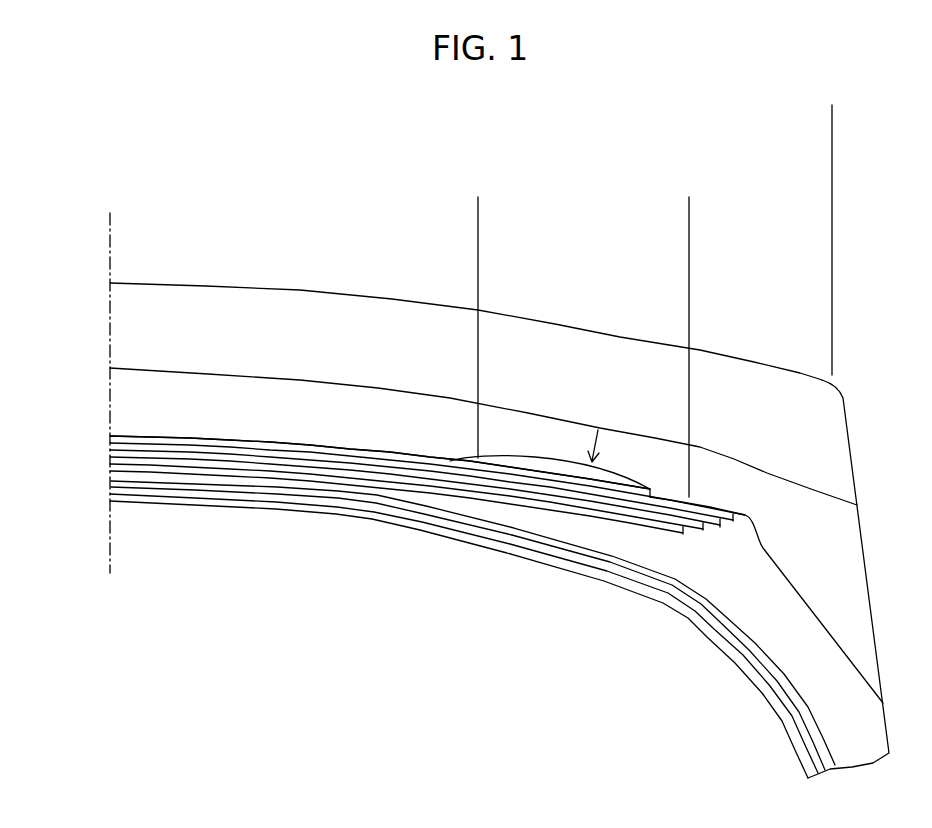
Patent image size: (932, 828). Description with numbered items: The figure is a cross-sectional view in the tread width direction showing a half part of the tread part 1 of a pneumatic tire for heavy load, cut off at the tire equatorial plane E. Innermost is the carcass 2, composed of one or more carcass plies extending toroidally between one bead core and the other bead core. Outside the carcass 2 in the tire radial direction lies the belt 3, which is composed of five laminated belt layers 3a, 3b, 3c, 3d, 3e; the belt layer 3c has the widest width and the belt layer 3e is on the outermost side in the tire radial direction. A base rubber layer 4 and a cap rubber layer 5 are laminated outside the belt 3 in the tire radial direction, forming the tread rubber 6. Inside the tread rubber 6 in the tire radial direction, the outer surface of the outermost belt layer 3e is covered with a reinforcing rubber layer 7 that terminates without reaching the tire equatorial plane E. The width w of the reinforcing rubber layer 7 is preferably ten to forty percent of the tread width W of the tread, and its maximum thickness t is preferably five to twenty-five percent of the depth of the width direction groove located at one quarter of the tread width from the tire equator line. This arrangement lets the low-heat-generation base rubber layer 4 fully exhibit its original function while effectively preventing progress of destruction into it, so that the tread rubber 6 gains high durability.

The tread part 1 is at (499, 466).
The carcass 2 is at (500, 545).
The belt 3 is at (427, 552).
The belt layer 3a is at (148, 612).
The belt layer 3b is at (308, 472).
The belt layer 3c is at (258, 458).
The belt layer 3d is at (203, 447).
The belt layer 3e is at (147, 438).
The base rubber layer 4 is at (138, 405).
The cap rubber layer 5 is at (138, 337).
The tread rubber 6 is at (230, 285).
The reinforcing rubber layer 7 is at (542, 468).
The tire equatorial plane E is at (108, 270).
The tread width W is at (108, 128).
The width of the reinforcing rubber layer w is at (688, 210).
The maximum thickness of the reinforcing rubber layer t is at (590, 486).